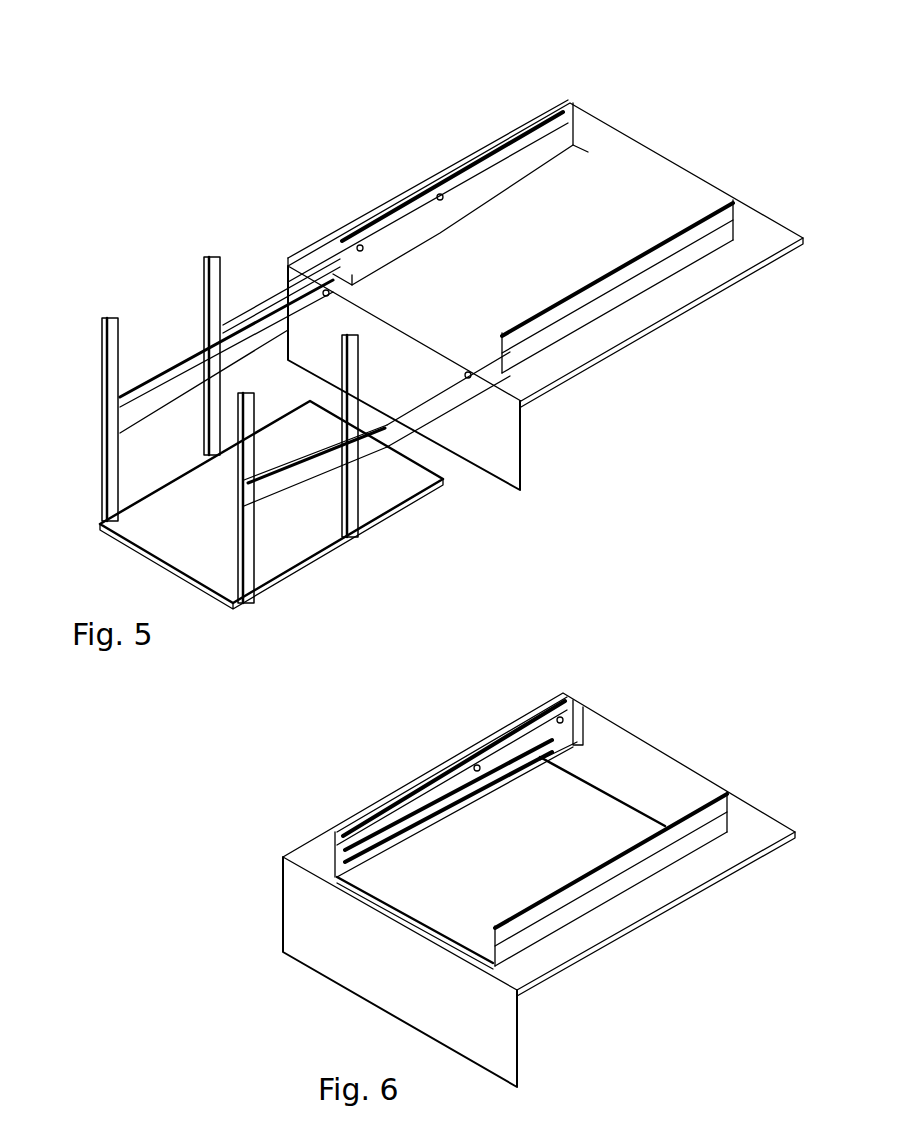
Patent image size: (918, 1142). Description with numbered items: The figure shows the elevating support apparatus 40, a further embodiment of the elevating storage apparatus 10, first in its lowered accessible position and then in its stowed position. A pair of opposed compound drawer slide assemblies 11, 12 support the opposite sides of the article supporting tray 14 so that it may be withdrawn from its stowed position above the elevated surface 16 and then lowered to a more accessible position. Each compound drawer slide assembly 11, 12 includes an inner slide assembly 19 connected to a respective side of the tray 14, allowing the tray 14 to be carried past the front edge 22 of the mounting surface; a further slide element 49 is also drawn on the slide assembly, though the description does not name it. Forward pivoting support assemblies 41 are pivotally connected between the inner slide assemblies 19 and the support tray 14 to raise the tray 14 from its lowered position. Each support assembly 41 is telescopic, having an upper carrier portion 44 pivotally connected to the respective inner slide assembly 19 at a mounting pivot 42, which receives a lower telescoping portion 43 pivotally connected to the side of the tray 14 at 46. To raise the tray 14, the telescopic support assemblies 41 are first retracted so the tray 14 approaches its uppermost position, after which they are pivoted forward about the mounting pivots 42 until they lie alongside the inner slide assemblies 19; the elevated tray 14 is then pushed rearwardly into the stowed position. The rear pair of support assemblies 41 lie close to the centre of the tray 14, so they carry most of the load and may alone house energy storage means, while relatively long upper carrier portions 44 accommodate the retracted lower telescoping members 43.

In FIG. 5, the elevating storage apparatus 10 is at (270, 242).
In FIG. 6, the elevating storage apparatus 10 is at (452, 742).
In FIG. 5, the compound drawer slide assembly 11 is at (497, 128).
In FIG. 6, the compound drawer slide assembly 11 is at (548, 688).
In FIG. 5, the compound drawer slide assembly 12 is at (668, 160).
In FIG. 6, the compound drawer slide assembly 12 is at (707, 773).
In FIG. 5, the article supporting tray 14 is at (271, 502).
In FIG. 6, the article supporting tray 14 is at (501, 863).
In FIG. 5, the elevated surface 16 is at (538, 245).
In FIG. 5, the inner slide assembly 19 is at (100, 350).
In FIG. 6, the inner slide assembly 19 is at (377, 795).
In FIG. 5, the front edge 22 is at (510, 385).
In FIG. 6, the front edge 22 is at (500, 960).
In FIG. 5, the elevating support apparatus 40 is at (404, 378).
In FIG. 6, the elevating support apparatus 40 is at (307, 827).
In FIG. 5, the support assembly 41 is at (204, 268).
In FIG. 5, the mounting pivot 42 is at (243, 500).
In FIG. 5, the lower telescoping portion 43 is at (206, 430).
In FIG. 5, the upper carrier portion 44 is at (205, 320).
In FIG. 6, the upper carrier portion 44 is at (507, 778).
In FIG. 5, the pivot connection 46 is at (138, 500).
In FIG. 5, the intermediate slide member 49 is at (392, 165).